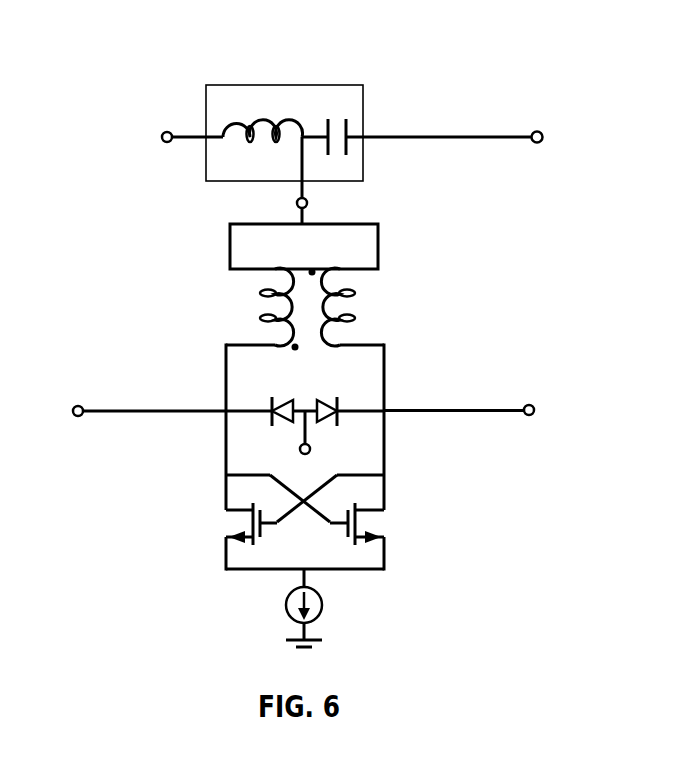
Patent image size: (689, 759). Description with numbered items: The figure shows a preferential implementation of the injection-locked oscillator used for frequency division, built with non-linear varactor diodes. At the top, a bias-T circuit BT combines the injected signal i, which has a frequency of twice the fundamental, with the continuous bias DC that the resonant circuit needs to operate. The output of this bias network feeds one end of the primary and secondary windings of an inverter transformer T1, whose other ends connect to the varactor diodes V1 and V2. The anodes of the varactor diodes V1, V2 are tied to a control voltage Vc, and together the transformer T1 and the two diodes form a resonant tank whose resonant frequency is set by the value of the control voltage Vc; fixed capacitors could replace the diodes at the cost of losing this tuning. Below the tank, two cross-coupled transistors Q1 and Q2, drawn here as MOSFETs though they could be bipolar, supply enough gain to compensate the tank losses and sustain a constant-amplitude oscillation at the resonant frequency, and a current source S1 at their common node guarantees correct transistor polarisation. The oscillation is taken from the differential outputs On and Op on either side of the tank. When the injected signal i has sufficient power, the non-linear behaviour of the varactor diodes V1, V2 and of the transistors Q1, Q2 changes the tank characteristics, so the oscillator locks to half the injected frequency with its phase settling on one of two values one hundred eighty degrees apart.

The DC bias DC is at (150, 139).
The bias-T circuit BT is at (284, 107).
The injected signal i is at (453, 103).
The inverter transformer T1 is at (304, 244).
The varactor diode V1 is at (269, 393).
The varactor diode V2 is at (341, 393).
The control voltage Vc is at (324, 435).
The differential output On is at (135, 431).
The differential output Op is at (471, 430).
The cross-coupled transistor Q1 is at (230, 537).
The cross-coupled transistor Q2 is at (376, 537).
The current source S1 is at (325, 608).